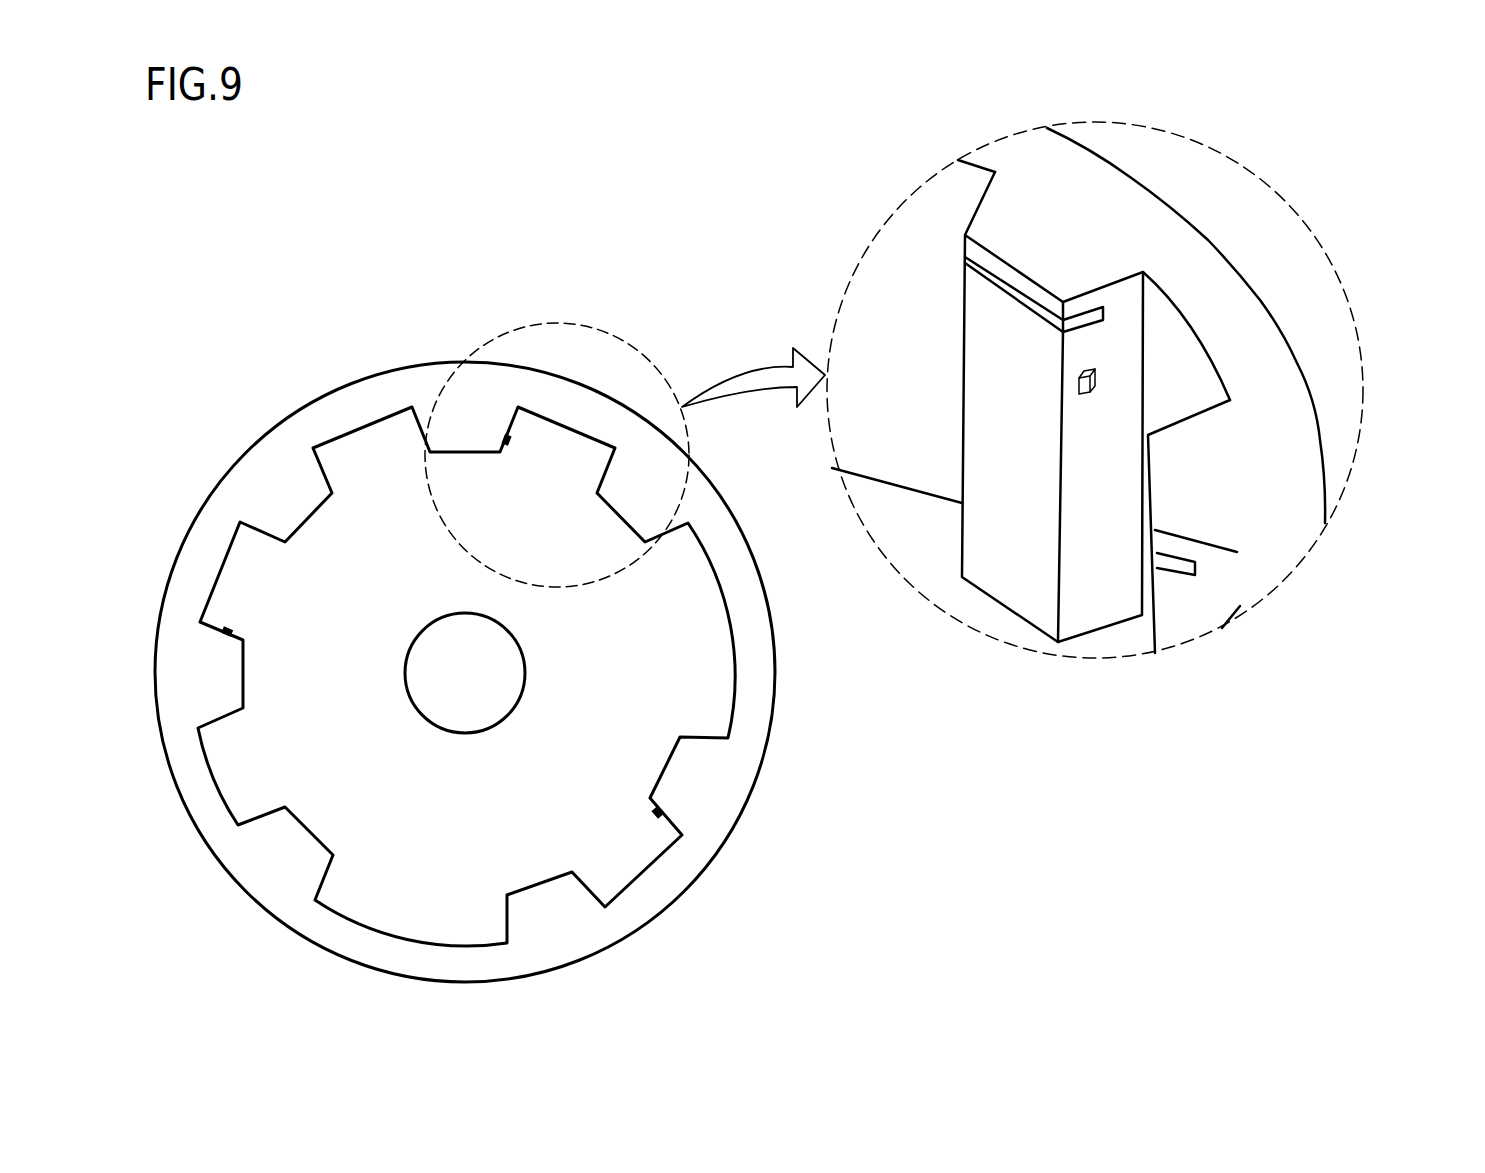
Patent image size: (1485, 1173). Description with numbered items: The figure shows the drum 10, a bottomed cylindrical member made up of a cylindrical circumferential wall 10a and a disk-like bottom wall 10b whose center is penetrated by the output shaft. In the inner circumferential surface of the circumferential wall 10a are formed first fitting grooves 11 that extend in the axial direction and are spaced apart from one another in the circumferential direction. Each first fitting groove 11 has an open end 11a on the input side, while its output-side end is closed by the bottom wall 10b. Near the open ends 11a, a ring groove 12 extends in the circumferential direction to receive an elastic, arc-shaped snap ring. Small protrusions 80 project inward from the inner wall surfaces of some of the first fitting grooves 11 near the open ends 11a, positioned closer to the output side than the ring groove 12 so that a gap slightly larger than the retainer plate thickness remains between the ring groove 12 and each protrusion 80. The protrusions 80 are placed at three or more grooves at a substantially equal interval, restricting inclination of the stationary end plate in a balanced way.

The drum 10 is at (363, 380).
The circumferential wall 10a is at (712, 782).
The bottom wall 10b is at (665, 645).
The first fitting groove 11 is at (638, 876).
The open end 11a is at (1193, 413).
The ring groove 12 is at (1097, 316).
The protrusion 80 is at (510, 438).